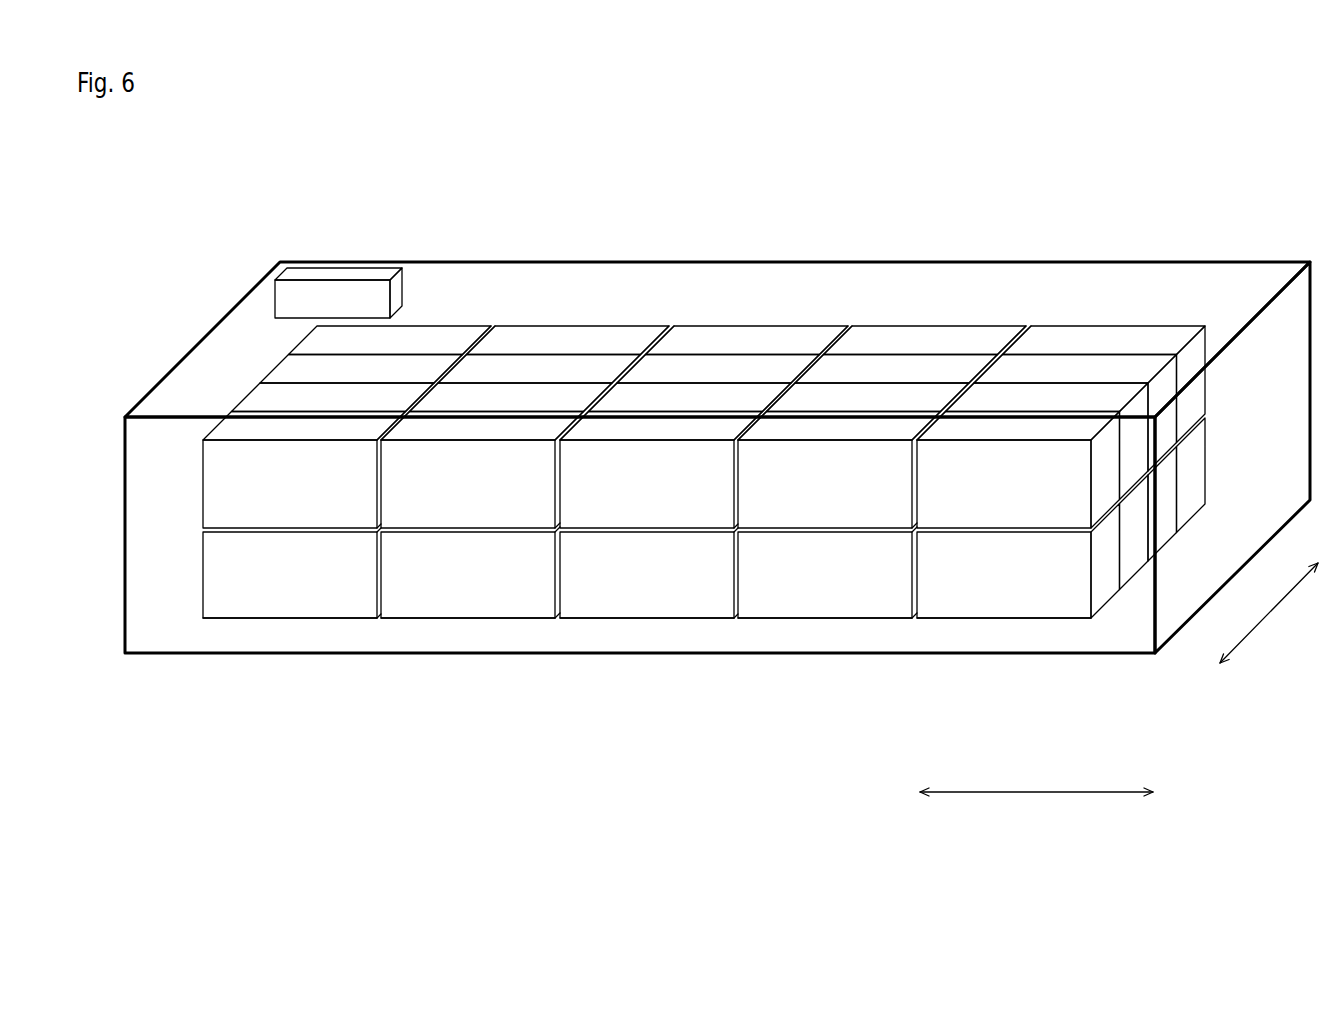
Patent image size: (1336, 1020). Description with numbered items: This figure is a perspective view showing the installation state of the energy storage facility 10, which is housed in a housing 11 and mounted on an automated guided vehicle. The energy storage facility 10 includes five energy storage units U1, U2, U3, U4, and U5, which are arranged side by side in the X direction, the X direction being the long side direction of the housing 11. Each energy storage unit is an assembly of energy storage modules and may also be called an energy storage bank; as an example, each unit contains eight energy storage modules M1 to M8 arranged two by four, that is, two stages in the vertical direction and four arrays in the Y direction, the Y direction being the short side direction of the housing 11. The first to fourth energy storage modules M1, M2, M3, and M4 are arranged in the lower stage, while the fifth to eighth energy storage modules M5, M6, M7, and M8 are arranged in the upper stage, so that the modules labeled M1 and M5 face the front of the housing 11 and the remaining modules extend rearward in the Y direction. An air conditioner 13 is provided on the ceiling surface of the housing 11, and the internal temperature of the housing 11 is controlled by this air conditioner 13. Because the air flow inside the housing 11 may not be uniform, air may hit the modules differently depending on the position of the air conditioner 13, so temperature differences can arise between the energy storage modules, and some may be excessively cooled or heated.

The energy storage facility 10 is at (1122, 293).
The housing 11 is at (178, 363).
The air conditioner 13 is at (339, 275).
The first energy storage module M1 is at (661, 561).
The second energy storage module M2 is at (1133, 565).
The third energy storage module M3 is at (1165, 530).
The fourth energy storage module M4 is at (1193, 507).
The fifth energy storage module M5 is at (661, 470).
The sixth energy storage module M6 is at (690, 441).
The seventh energy storage module M7 is at (718, 413).
The eighth energy storage module M8 is at (747, 384).
The energy storage unit U1 is at (280, 633).
The energy storage unit U2 is at (462, 633).
The energy storage unit U3 is at (643, 633).
The energy storage unit U4 is at (823, 633).
The energy storage unit U5 is at (1005, 633).
The X direction X is at (1036, 778).
The Y direction Y is at (1269, 613).